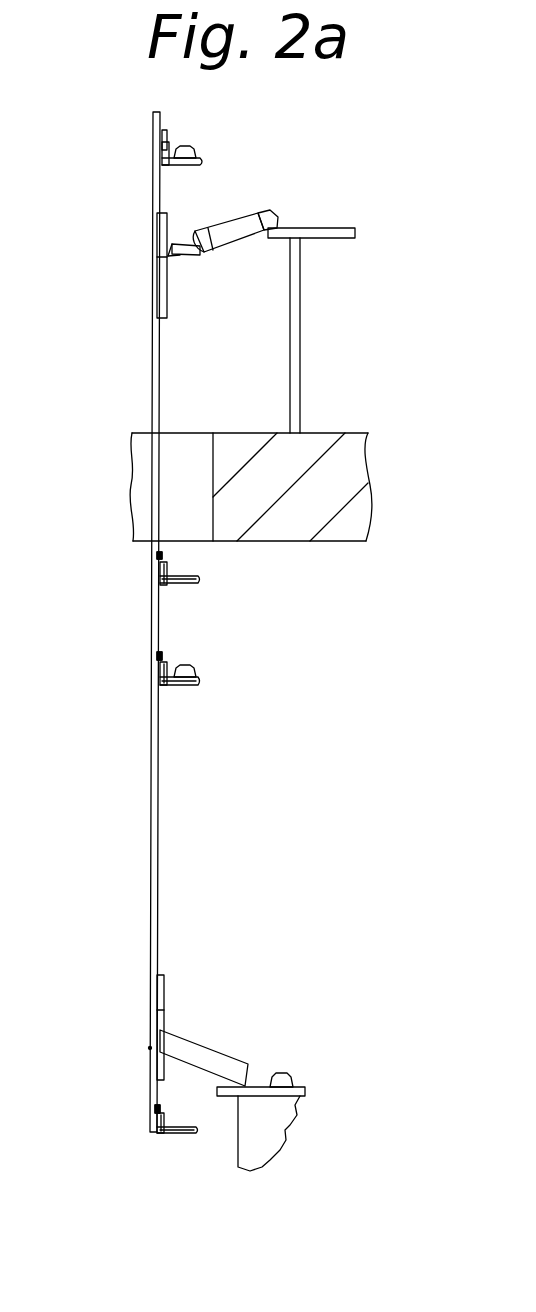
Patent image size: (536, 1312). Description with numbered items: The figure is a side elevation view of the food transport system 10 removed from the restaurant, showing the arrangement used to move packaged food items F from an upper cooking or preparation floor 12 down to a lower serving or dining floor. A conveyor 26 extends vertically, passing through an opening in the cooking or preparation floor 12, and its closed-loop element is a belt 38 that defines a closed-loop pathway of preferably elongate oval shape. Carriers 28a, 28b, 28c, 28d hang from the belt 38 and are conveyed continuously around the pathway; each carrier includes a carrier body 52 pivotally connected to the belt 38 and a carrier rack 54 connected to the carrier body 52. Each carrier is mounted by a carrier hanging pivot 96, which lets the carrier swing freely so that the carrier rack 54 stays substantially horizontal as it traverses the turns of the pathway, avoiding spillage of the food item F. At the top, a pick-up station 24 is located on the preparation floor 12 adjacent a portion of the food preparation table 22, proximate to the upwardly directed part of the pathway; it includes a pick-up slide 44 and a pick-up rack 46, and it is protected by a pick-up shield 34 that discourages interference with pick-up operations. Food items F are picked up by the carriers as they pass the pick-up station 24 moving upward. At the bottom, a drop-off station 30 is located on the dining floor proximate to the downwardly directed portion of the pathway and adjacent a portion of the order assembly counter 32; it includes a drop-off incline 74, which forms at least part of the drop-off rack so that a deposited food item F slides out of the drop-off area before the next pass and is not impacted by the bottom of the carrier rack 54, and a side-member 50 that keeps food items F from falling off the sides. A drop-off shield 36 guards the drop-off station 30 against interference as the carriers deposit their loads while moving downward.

The food transport system 10 is at (277, 358).
The cooking or preparation floor 12 is at (335, 500).
The food preparation table 22 is at (345, 228).
The pick-up station 24 is at (252, 219).
The conveyor 26 is at (87, 622).
The carrier 28a is at (146, 136).
The carrier 28b is at (138, 582).
The carrier 28c is at (140, 1130).
The carrier 28d is at (220, 645).
The drop-off station 30 is at (292, 1076).
The order assembly counter 32 is at (302, 1093).
The pick-up shield 34 is at (158, 272).
The drop-off shield 36 is at (165, 998).
The belt 38 is at (152, 754).
The pick-up slide 44 is at (225, 232).
The pick-up rack 46 is at (185, 255).
The side-member 50 is at (148, 1048).
The carrier body 52 is at (168, 568).
The carrier rack 54 is at (200, 580).
The drop-off incline 74 is at (198, 1058).
The carrier hanging pivot 96 is at (162, 553).
The food item F is at (183, 148).